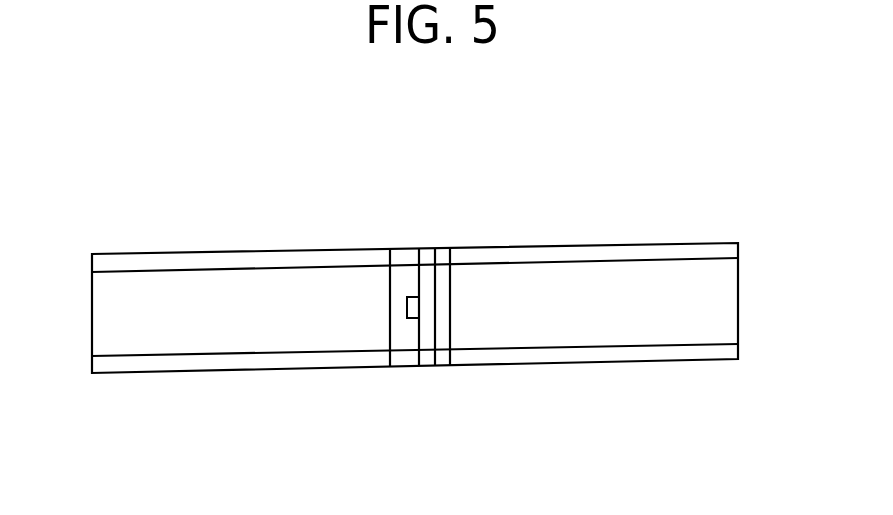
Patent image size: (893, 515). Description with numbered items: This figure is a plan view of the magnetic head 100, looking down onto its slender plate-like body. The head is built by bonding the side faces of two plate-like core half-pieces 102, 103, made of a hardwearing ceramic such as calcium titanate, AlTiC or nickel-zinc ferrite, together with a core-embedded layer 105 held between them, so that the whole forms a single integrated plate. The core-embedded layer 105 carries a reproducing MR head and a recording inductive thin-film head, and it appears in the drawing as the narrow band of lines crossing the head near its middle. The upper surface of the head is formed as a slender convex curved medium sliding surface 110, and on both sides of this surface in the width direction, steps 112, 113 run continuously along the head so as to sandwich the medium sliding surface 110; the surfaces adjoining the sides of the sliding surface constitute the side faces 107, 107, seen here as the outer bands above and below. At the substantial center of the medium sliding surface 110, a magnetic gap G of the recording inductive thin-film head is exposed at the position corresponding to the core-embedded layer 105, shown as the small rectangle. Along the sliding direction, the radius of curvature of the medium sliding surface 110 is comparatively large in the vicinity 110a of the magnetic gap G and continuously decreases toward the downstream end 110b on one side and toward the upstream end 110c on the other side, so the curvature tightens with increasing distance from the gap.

The magnetic head 100 is at (670, 213).
The core half-piece 102 is at (232, 373).
The core half-piece 103 is at (537, 365).
The core-embedded layer 105 is at (403, 258).
The side face 107 is at (623, 260).
The medium sliding surface 110 is at (470, 278).
The vicinity of the magnetic gap 110a is at (360, 337).
The downstream end 110b is at (726, 294).
The upstream end 110c is at (97, 319).
The step 112 is at (725, 352).
The step 113 is at (718, 252).
The magnetic gap G is at (417, 307).